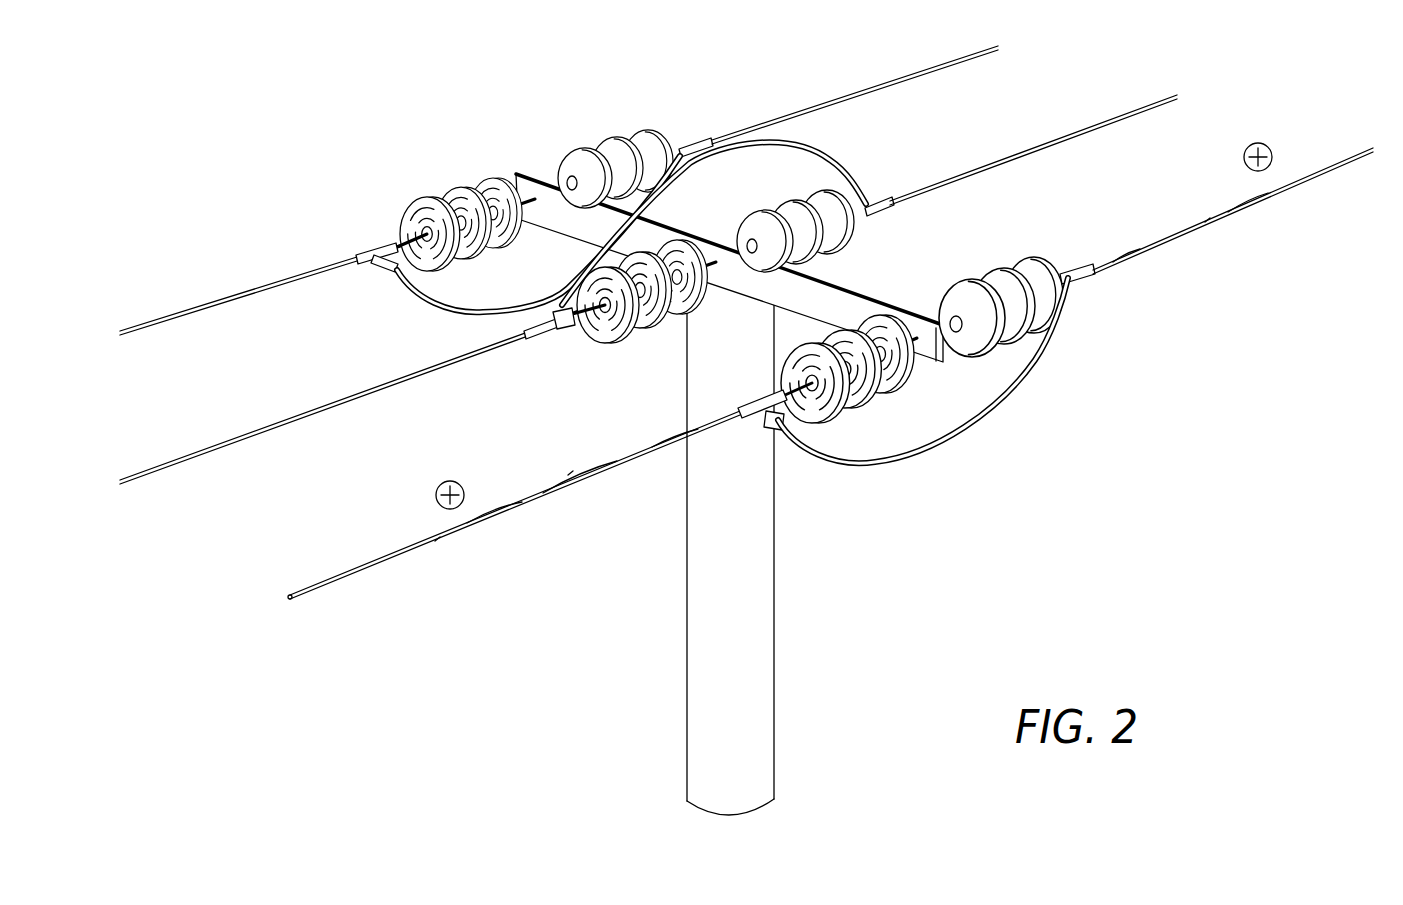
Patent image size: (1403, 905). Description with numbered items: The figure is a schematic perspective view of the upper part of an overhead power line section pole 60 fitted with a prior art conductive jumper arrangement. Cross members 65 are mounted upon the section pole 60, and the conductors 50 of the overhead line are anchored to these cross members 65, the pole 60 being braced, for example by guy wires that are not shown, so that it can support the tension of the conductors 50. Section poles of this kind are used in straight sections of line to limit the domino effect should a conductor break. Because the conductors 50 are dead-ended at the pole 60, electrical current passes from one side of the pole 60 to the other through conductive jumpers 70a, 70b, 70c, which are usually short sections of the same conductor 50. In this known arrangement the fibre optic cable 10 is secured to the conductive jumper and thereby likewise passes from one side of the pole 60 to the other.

The fibre optic cable 10 is at (560, 497).
The conductors 50 is at (338, 583).
The section pole 60 is at (780, 611).
The cross members 65 is at (857, 296).
The conductive jumper 70a is at (407, 287).
The conductive jumper 70b is at (843, 163).
The conductive jumper 70c is at (1037, 360).